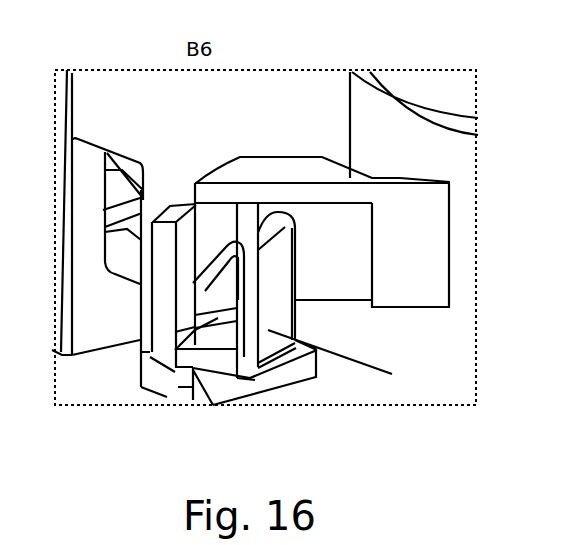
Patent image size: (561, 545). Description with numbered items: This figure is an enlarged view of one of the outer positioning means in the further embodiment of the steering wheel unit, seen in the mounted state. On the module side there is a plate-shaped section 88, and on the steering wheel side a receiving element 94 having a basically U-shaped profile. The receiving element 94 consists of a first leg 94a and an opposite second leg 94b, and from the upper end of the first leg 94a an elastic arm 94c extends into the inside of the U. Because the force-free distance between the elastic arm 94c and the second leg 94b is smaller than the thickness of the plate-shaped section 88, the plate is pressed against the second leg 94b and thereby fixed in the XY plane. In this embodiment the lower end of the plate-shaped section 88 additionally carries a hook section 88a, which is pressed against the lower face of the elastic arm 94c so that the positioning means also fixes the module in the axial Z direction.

The plate-shaped section 88 is at (205, 229).
The hook section 88a is at (176, 372).
The receiving element 94 is at (317, 350).
The first leg 94a is at (270, 255).
The second leg 94b is at (160, 307).
The elastic arm 94c is at (200, 295).